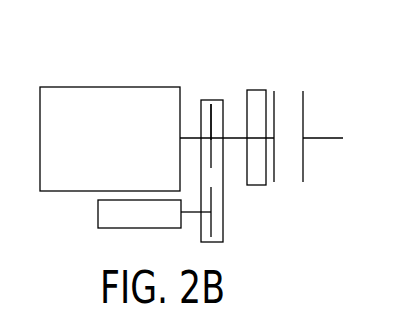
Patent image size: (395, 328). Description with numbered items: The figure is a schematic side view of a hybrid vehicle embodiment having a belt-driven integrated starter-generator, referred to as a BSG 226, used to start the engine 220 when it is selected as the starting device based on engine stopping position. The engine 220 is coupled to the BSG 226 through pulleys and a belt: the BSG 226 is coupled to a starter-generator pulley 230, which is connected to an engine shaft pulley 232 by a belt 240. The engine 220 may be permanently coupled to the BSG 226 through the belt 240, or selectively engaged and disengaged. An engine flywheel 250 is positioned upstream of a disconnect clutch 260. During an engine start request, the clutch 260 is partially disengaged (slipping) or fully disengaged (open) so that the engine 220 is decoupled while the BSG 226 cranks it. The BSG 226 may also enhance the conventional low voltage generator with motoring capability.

The engine 220 is at (105, 87).
The BSG 226 is at (98, 222).
The starter-generator pulley 230 is at (212, 236).
The engine shaft pulley 232 is at (211, 112).
The belt 240 is at (223, 197).
The engine flywheel 250 is at (257, 90).
The disconnect clutch 260 is at (293, 64).